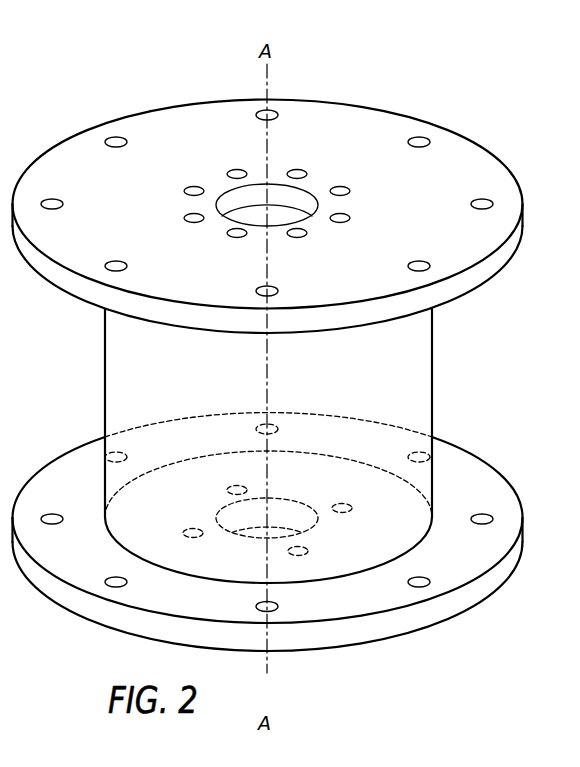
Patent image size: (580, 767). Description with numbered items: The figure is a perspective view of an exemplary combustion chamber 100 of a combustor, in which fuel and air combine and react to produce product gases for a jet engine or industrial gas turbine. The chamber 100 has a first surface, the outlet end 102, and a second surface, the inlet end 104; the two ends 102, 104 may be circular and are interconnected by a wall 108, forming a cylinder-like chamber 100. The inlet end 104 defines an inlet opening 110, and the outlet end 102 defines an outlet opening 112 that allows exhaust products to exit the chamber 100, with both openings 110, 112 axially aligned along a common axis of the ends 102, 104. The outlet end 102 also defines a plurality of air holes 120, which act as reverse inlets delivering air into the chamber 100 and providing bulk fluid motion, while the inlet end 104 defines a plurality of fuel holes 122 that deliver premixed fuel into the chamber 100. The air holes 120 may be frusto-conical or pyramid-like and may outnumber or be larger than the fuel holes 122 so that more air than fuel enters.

The combustion chamber 100 is at (402, 90).
The outlet end 102 is at (455, 173).
The inlet end 104 is at (417, 622).
The wall 108 is at (432, 402).
The inlet opening 110 is at (280, 527).
The outlet opening 112 is at (259, 200).
The air holes 120 is at (238, 228).
The fuel holes 122 is at (293, 543).